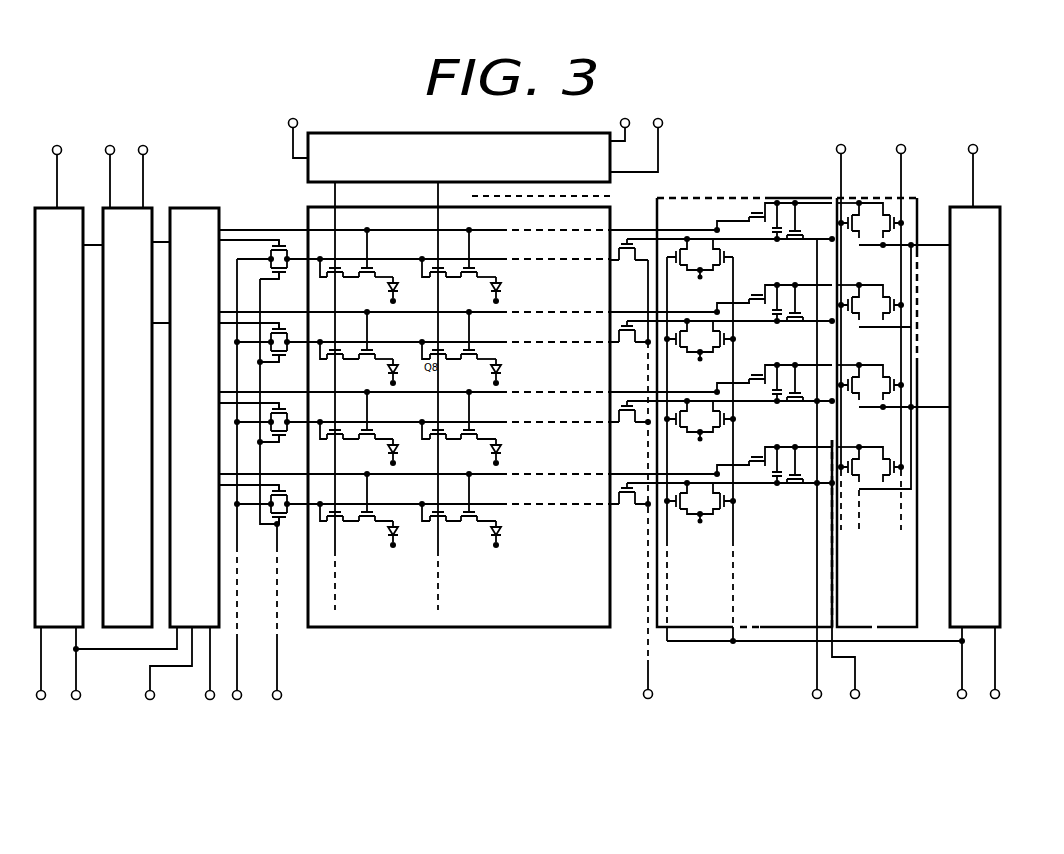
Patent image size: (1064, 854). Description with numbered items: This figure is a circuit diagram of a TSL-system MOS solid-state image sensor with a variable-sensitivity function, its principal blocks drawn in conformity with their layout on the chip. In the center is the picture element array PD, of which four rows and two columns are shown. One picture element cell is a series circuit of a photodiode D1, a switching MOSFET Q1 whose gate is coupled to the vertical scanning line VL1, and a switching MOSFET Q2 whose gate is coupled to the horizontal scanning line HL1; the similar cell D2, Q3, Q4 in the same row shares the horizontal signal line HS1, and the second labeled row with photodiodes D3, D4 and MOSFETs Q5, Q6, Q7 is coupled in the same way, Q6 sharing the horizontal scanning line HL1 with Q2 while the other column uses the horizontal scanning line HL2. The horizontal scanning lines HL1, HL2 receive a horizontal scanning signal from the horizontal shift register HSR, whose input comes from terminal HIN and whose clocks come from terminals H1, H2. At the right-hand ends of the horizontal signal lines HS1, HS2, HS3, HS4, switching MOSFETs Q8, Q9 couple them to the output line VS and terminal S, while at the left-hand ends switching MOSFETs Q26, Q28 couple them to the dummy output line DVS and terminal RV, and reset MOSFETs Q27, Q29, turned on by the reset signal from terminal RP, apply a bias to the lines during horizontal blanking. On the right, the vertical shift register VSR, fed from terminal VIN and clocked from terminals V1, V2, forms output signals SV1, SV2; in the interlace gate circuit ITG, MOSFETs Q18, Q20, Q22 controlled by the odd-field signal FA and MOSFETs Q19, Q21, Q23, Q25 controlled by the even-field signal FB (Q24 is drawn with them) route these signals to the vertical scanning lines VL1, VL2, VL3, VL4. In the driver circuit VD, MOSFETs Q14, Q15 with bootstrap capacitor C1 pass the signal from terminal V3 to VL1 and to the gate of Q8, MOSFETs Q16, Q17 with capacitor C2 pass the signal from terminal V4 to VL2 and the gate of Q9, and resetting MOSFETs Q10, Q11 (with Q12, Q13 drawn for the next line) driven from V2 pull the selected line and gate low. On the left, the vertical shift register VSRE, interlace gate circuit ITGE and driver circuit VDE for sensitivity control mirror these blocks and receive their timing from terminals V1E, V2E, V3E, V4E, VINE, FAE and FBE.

The vertical shift register VSRE is at (36, 208).
The interlace gate circuit ITGE is at (152, 208).
The driver circuit VDE is at (219, 208).
The horizontal shift register HSR is at (308, 133).
The picture element array PD is at (420, 745).
The driver circuit VD is at (670, 745).
The interlace gate circuit ITG is at (887, 725).
The vertical shift register VSR is at (1001, 207).
The terminal VINE is at (55, 170).
The terminal FAE is at (109, 170).
The terminal FBE is at (142, 170).
The terminal HIN is at (294, 132).
The terminal H1 is at (637, 139).
The terminal H2 is at (621, 123).
The odd-number field signal FA is at (839, 330).
The even-number field signal FB is at (900, 330).
The terminal VIN is at (970, 169).
The terminal V1E is at (41, 671).
The terminal V2E is at (120, 671).
The terminal V3E is at (165, 671).
The terminal V4E is at (209, 671).
The terminal RV is at (236, 487).
The terminal RP is at (270, 497).
The dummy output line DVS is at (237, 662).
The terminal S is at (648, 488).
The output line VS is at (631, 653).
The terminal V1 is at (995, 671).
The terminal V2 is at (818, 671).
The terminal V3 is at (847, 671).
The terminal V4 is at (816, 477).
The horizontal scanning line HL1 is at (349, 396).
The horizontal scanning line HL2 is at (524, 396).
The vertical scanning line VL1 is at (469, 223).
The vertical scanning line VL2 is at (469, 305).
The vertical scanning line VL3 is at (469, 385).
The vertical scanning line VL4 is at (469, 467).
The horizontal signal line HS1 is at (497, 259).
The horizontal signal line HS2 is at (497, 342).
The horizontal signal line HS3 is at (497, 422).
The horizontal signal line HS4 is at (497, 504).
The output signal SV1 is at (904, 318).
The output signal SV2 is at (904, 401).
The switching MOSFET Q1 is at (359, 259).
The switching MOSFET Q2 is at (331, 275).
The switching MOSFET Q3 is at (461, 259).
The switching MOSFET Q4 is at (434, 275).
The transistor Q5 is at (359, 341).
The switching MOSFET Q6 is at (331, 357).
The transistor Q7 is at (461, 341).
The switching MOSFET Q8 is at (680, 247).
The switching MOSFET Q9 is at (680, 329).
The resetting MOSFET Q10 is at (700, 263).
The resetting MOSFET Q11 is at (716, 281).
The transistor Q12 is at (700, 345).
The transistor Q13 is at (716, 363).
The switching MOSFET Q14 is at (777, 211).
The switching MOSFET Q15 is at (731, 229).
The switching MOSFET Q16 is at (777, 293).
The switching MOSFET Q17 is at (731, 311).
The switching MOSFET Q18 is at (870, 210).
The switching MOSFET Q19 is at (869, 223).
The switching MOSFET Q20 is at (870, 292).
The switching MOSFET Q21 is at (885, 313).
The switching MOSFET Q22 is at (870, 372).
The switching MOSFET Q23 is at (869, 385).
The transistor Q24 is at (870, 454).
The switching MOSFET Q25 is at (885, 448).
The switching MOSFET Q26 is at (262, 256).
The switching MOSFET Q27 is at (283, 279).
The switching MOSFET Q28 is at (262, 339).
The switching MOSFET Q29 is at (283, 362).
The photodiode D1 is at (388, 281).
The photodiode D2 is at (491, 281).
The photodiode D3 is at (388, 363).
The photodiode D4 is at (491, 363).
The capacitor C1 is at (768, 221).
The capacitor C2 is at (768, 303).